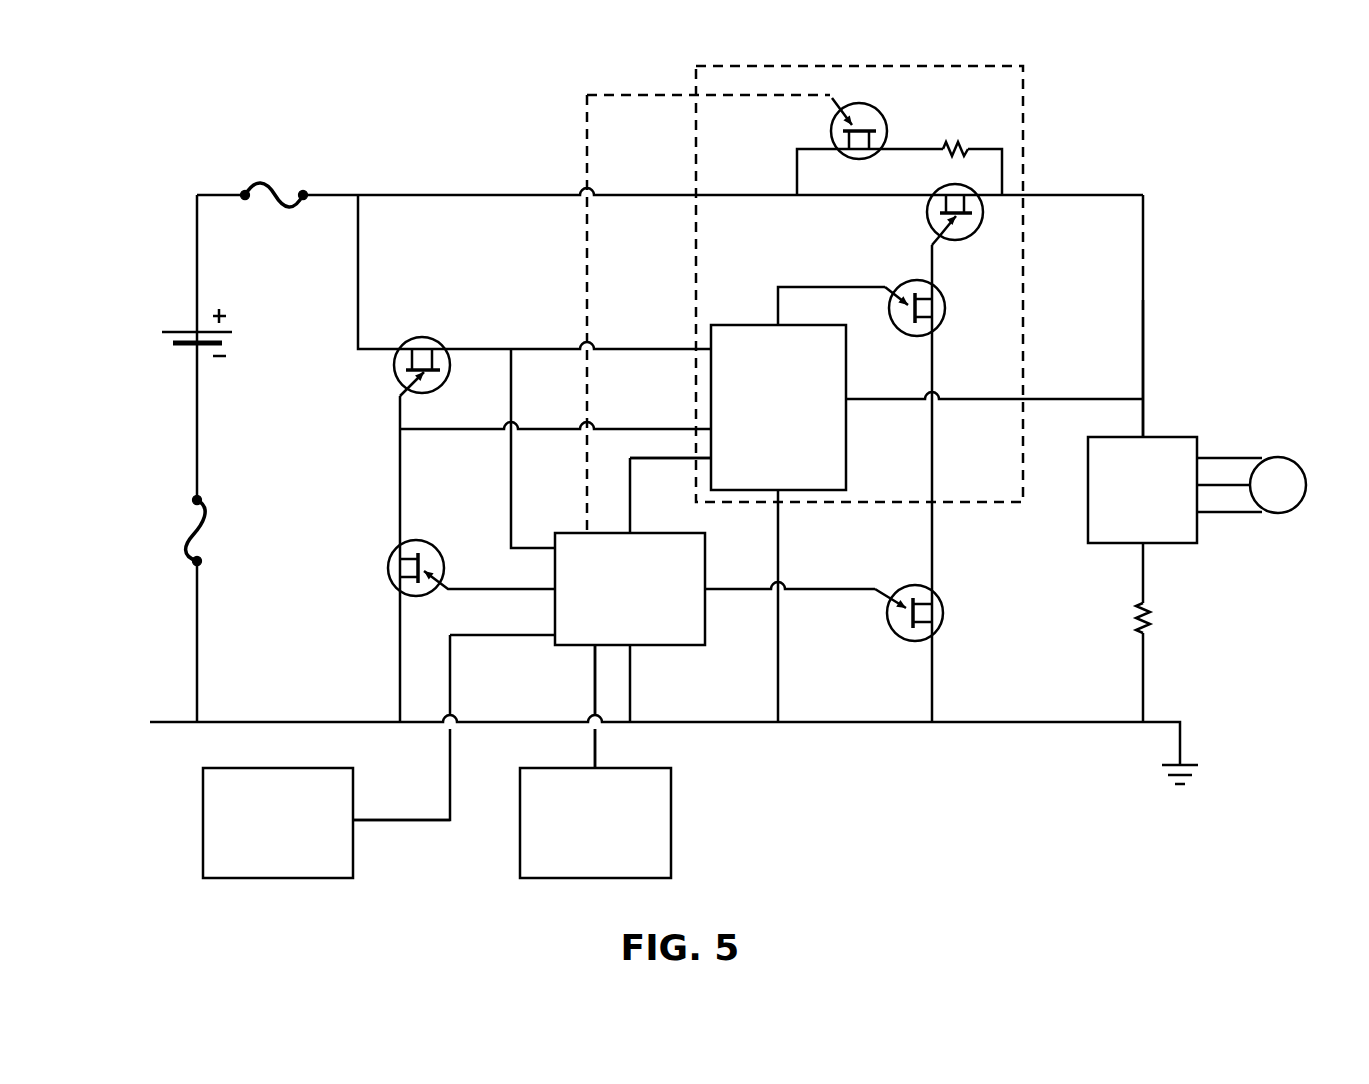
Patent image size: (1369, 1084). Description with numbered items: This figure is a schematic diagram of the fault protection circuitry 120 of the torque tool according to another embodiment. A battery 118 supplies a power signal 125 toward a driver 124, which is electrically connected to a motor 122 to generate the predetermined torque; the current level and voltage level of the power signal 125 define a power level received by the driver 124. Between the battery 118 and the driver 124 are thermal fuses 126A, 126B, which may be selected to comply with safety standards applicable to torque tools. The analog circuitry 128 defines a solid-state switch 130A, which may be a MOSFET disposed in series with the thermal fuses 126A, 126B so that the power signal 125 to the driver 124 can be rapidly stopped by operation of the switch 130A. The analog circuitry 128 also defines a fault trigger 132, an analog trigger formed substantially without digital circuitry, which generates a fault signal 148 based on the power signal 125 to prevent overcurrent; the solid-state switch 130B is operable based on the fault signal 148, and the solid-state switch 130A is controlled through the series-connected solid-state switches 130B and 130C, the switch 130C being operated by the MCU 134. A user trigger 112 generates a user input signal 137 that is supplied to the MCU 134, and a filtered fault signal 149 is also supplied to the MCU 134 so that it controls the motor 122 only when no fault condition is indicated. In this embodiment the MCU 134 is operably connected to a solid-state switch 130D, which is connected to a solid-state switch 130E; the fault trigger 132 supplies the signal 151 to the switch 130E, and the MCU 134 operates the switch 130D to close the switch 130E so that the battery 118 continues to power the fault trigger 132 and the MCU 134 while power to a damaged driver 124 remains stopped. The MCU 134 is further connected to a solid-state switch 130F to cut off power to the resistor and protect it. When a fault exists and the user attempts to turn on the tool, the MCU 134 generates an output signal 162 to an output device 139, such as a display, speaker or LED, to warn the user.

The fault protection circuitry 120 is at (100, 100).
The battery 118 is at (188, 331).
The thermal fuse 126A is at (258, 187).
The thermal fuse 126B is at (192, 523).
The solid-state switch 130E is at (421, 338).
The signal 151 is at (548, 428).
The analog circuitry 128 is at (1023, 126).
The solid-state switch 130F is at (888, 113).
The solid-state switch 130A is at (985, 212).
The fault signal 148 is at (820, 287).
The solid-state switch 130B is at (946, 300).
The fault trigger 132 is at (778, 407).
The filtered fault signal 149 is at (700, 462).
The MCU 134 is at (630, 589).
The solid-state switch 130D is at (390, 571).
The solid-state switch 130C is at (910, 642).
The power signal 125 is at (1143, 377).
The driver 124 is at (1142, 490).
The motor 122 is at (1283, 458).
The output device 139 is at (278, 823).
The output signal 162 is at (405, 822).
The user trigger 112 is at (595, 823).
The user input signal 137 is at (595, 672).